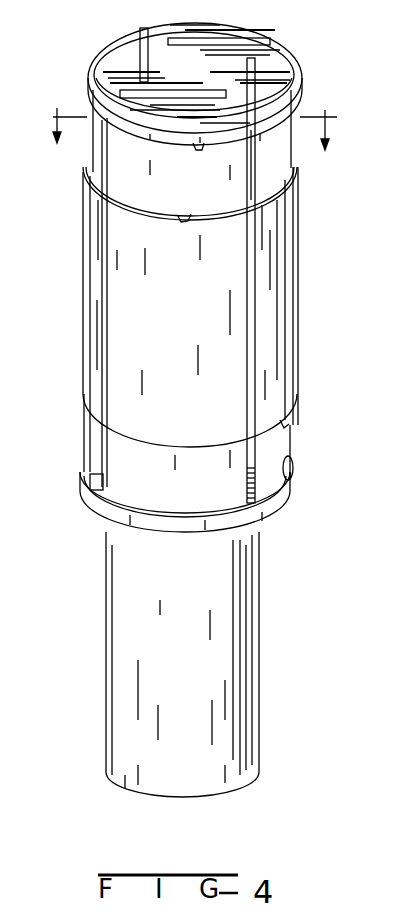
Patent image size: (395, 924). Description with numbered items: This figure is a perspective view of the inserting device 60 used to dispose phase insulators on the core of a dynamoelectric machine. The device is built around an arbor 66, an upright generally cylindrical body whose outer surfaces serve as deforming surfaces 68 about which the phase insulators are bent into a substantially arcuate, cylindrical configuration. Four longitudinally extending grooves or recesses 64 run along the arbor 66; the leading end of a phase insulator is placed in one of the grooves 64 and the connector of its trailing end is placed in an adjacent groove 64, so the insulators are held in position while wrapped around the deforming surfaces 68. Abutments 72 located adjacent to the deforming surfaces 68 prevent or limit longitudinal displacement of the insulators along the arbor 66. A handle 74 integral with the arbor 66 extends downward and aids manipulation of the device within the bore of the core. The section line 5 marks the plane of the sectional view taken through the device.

The section line 5- 5 is at (193, 143).
The inserting device 60 is at (286, 32).
The grooves 64 is at (102, 268).
The arbor 66 is at (300, 243).
The deforming surfaces 68 is at (202, 183).
The abutments 72 is at (198, 147).
The handle 74 is at (217, 637).